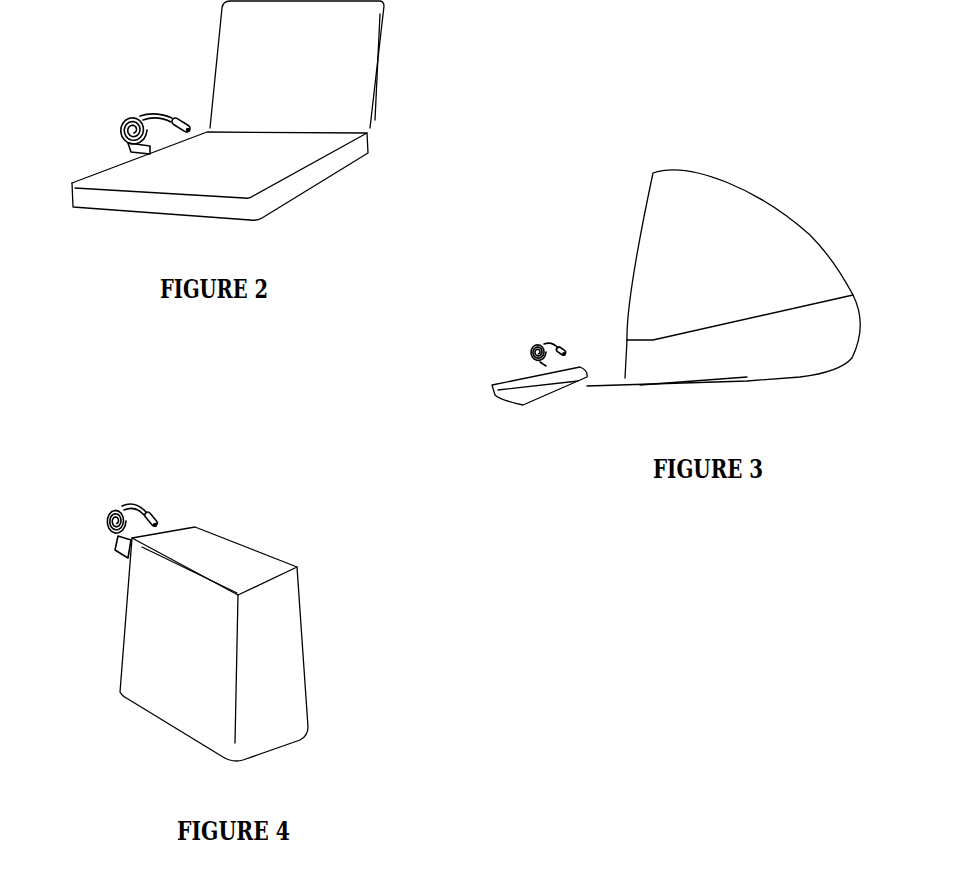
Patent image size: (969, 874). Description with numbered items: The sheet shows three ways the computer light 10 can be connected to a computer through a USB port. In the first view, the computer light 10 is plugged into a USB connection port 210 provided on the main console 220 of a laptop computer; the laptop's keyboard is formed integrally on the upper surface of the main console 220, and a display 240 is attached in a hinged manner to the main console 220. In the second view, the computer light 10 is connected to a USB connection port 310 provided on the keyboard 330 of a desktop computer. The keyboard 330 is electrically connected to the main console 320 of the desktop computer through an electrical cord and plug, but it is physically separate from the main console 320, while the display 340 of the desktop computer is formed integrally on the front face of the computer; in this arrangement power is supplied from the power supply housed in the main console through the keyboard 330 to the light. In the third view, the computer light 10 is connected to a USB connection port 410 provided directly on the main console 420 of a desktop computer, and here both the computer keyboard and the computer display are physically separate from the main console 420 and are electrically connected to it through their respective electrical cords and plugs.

In FIG. 2, the computer light 10 is at (147, 110).
In FIG. 3, the computer light 10 is at (538, 343).
In FIG. 4, the computer light 10 is at (115, 500).
In FIG. 2, the USB connection port 210 is at (137, 150).
In FIG. 2, the main console 220 is at (210, 178).
In FIG. 2, the display 240 is at (363, 86).
In FIG. 3, the USB connection port 310 is at (547, 364).
In FIG. 3, the main console 320 is at (800, 355).
In FIG. 3, the keyboard 330 is at (523, 396).
In FIG. 3, the display 340 is at (634, 243).
In FIG. 4, the USB connection port 410 is at (125, 563).
In FIG. 4, the main console 420 is at (238, 575).